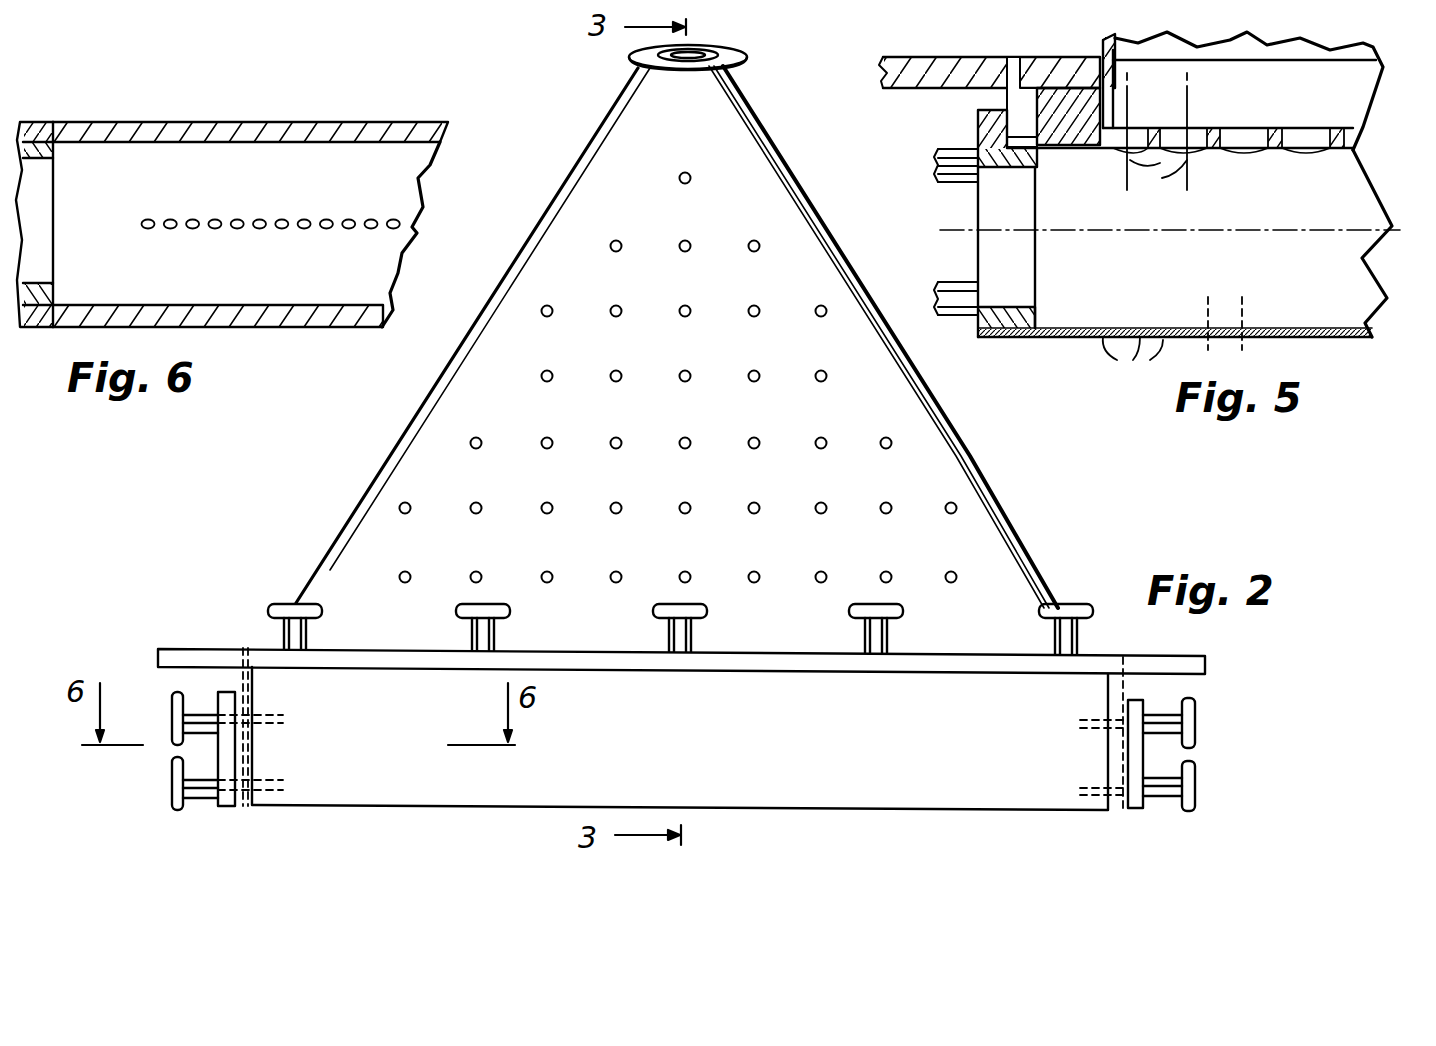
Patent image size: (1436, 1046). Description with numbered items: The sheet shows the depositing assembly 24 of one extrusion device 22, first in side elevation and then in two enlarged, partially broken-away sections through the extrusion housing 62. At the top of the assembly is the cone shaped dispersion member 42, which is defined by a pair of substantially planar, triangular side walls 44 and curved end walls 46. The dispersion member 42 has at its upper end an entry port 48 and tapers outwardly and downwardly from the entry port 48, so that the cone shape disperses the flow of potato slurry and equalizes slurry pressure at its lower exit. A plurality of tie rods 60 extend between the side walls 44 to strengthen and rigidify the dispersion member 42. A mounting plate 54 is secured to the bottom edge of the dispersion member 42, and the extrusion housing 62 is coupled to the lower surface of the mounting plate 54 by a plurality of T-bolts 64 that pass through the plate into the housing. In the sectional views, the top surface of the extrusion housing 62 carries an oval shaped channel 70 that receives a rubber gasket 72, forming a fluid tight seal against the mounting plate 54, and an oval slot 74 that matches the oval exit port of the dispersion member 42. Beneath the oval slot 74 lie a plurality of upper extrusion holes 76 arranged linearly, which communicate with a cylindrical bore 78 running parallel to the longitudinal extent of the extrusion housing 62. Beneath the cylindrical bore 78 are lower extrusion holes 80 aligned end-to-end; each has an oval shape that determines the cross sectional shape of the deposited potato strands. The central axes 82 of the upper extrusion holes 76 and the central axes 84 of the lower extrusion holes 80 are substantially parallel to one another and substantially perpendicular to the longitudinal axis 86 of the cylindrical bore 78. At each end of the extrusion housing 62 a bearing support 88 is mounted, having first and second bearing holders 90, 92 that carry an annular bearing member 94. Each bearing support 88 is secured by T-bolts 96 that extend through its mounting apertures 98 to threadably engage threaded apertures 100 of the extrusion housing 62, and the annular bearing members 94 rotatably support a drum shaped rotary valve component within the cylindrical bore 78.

In FIG. 2, the extrusion device 22 is at (1045, 512).
In FIG. 2, the depositing assembly 24 is at (935, 470).
In FIG. 2, the cone shaped dispersion member 42 is at (752, 147).
In FIG. 5, the cone shaped dispersion member 42 is at (1247, 43).
In FIG. 2, the triangular side walls 44 is at (669, 99).
In FIG. 2, the curved end walls 46 is at (800, 172).
In FIG. 2, the entry port 48 is at (700, 54).
In FIG. 2, the mounting plate 54 is at (201, 650).
In FIG. 5, the mounting plate 54 is at (950, 57).
In FIG. 2, the tie rods 60 is at (747, 313).
In FIG. 2, the extrusion housing 62 is at (1085, 806).
In FIG. 6, the extrusion housing 62 is at (270, 117).
In FIG. 2, the T-bolts 64 is at (473, 632).
In FIG. 5, the oval shaped channel 70 is at (1100, 75).
In FIG. 5, the rubber gasket 72 is at (1058, 90).
In FIG. 5, the oval slot 74 is at (1352, 101).
In FIG. 5, the upper extrusion holes 76 is at (1240, 152).
In FIG. 5, the cylindrical bore 78 is at (1330, 197).
In FIG. 6, the cylindrical bore 78 is at (140, 160).
In FIG. 5, the lower extrusion holes 80 is at (1133, 368).
In FIG. 6, the lower extrusion holes 80 is at (190, 218).
In FIG. 5, the central axes of the upper extrusion holes 82 is at (1157, 149).
In FIG. 5, the central axes of the lower extrusion holes 84 is at (1226, 310).
In FIG. 5, the longitudinal axis of the cylindrical bore 86 is at (1327, 229).
In FIG. 2, the bearing support 88 is at (226, 806).
In FIG. 5, the bearing support 88 is at (993, 338).
In FIG. 6, the bearing support 88 is at (55, 118).
In FIG. 2, the first bearing holder 90 is at (243, 760).
In FIG. 5, the first bearing holder 90 is at (1012, 57).
In FIG. 6, the first bearing holder 90 is at (30, 120).
In FIG. 2, the second bearing holder 92 is at (220, 692).
In FIG. 5, the second bearing holder 92 is at (980, 118).
In FIG. 6, the second bearing holder 92 is at (21, 327).
In FIG. 5, the annular bearing member 94 is at (999, 162).
In FIG. 6, the annular bearing member 94 is at (53, 150).
In FIG. 2, the T-bolts 96 is at (172, 712).
In FIG. 5, the T-bolts 96 is at (942, 151).
In FIG. 2, the mounting apertures 98 is at (1126, 833).
In FIG. 2, the threaded apertures 100 is at (298, 706).